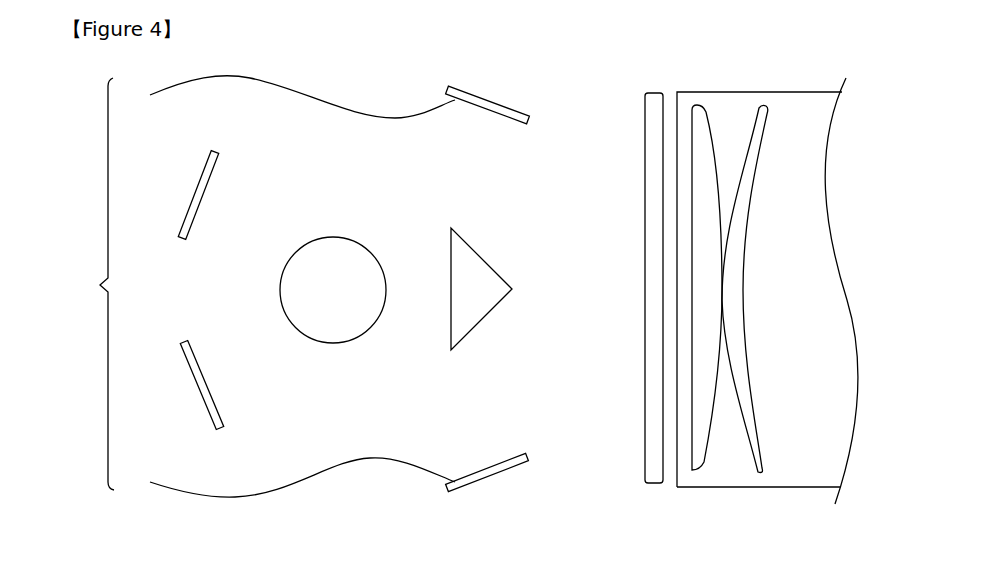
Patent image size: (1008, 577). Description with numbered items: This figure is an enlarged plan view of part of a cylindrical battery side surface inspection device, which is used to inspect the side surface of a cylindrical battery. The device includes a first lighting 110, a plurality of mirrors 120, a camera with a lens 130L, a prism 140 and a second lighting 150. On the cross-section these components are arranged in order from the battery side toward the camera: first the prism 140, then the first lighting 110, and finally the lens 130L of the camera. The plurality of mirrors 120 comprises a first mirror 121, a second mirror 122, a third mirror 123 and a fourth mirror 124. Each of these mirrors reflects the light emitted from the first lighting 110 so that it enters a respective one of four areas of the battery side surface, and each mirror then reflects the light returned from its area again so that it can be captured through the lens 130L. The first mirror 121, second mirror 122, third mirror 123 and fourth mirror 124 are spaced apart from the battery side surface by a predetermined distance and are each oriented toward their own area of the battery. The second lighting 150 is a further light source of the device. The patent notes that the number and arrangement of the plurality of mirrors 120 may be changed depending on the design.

The first lighting 110 is at (647, 470).
The plurality of mirrors 120 is at (88, 284).
The first mirror 121 is at (323, 100).
The second mirror 122 is at (202, 190).
The third mirror 123 is at (197, 385).
The fourth mirror 124 is at (321, 475).
The lens 130L is at (748, 443).
The prism 140 is at (477, 262).
The second lighting 150 is at (333, 249).